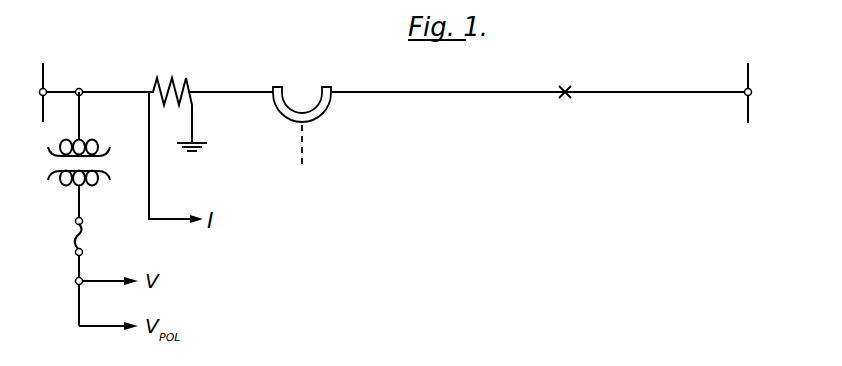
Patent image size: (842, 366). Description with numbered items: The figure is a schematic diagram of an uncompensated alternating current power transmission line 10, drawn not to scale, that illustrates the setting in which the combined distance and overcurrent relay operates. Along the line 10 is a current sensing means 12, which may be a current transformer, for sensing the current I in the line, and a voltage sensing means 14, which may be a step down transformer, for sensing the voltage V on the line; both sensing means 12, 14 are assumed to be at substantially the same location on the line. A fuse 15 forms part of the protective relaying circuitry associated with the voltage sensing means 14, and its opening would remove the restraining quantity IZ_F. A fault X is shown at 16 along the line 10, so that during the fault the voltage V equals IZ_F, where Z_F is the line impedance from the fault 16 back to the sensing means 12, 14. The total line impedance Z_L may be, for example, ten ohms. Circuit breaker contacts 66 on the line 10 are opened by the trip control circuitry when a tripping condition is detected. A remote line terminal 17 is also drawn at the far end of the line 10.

The alternating current power transmission line 10 is at (375, 92).
The current sensing means 12 is at (155, 82).
The voltage sensing means 14 is at (100, 165).
The fuse 15 is at (85, 233).
The fault location 16 is at (566, 97).
The remote bus 17 is at (750, 108).
The circuit breaker contacts 66 is at (322, 116).